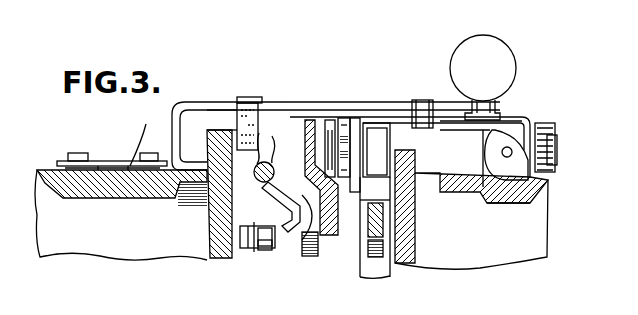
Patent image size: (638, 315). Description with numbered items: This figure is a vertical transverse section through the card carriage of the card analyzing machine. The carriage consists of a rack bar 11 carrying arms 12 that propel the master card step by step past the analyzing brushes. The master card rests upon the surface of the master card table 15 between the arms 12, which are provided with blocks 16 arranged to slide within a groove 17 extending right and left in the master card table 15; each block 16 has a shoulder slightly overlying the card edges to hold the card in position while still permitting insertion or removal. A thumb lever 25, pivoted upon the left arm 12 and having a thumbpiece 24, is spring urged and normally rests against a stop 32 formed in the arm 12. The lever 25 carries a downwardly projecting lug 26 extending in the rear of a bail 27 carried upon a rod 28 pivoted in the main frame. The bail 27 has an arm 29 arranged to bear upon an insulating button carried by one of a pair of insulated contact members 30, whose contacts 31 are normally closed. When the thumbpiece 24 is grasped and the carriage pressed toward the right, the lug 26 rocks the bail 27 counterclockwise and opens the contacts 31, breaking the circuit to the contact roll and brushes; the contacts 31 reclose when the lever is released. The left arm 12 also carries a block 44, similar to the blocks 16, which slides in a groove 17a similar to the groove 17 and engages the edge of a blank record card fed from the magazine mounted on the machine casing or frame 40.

The master card table 15 is at (44, 168).
The blocks 16 is at (113, 160).
The groove 17 is at (146, 136).
The groove 17a is at (509, 204).
The arms 12 is at (208, 108).
The thumb lever 25 is at (307, 106).
The rack bar 11 is at (349, 128).
The stop 32 is at (422, 108).
The thumbpiece 24 is at (500, 63).
The lug 26 is at (248, 134).
The bail 27 is at (260, 130).
The rod 28 is at (274, 167).
The arm 29 is at (278, 193).
The contact members 30 is at (272, 232).
The contacts 31 is at (262, 250).
The machine casing or frame 40 is at (218, 248).
The block 44 is at (478, 196).